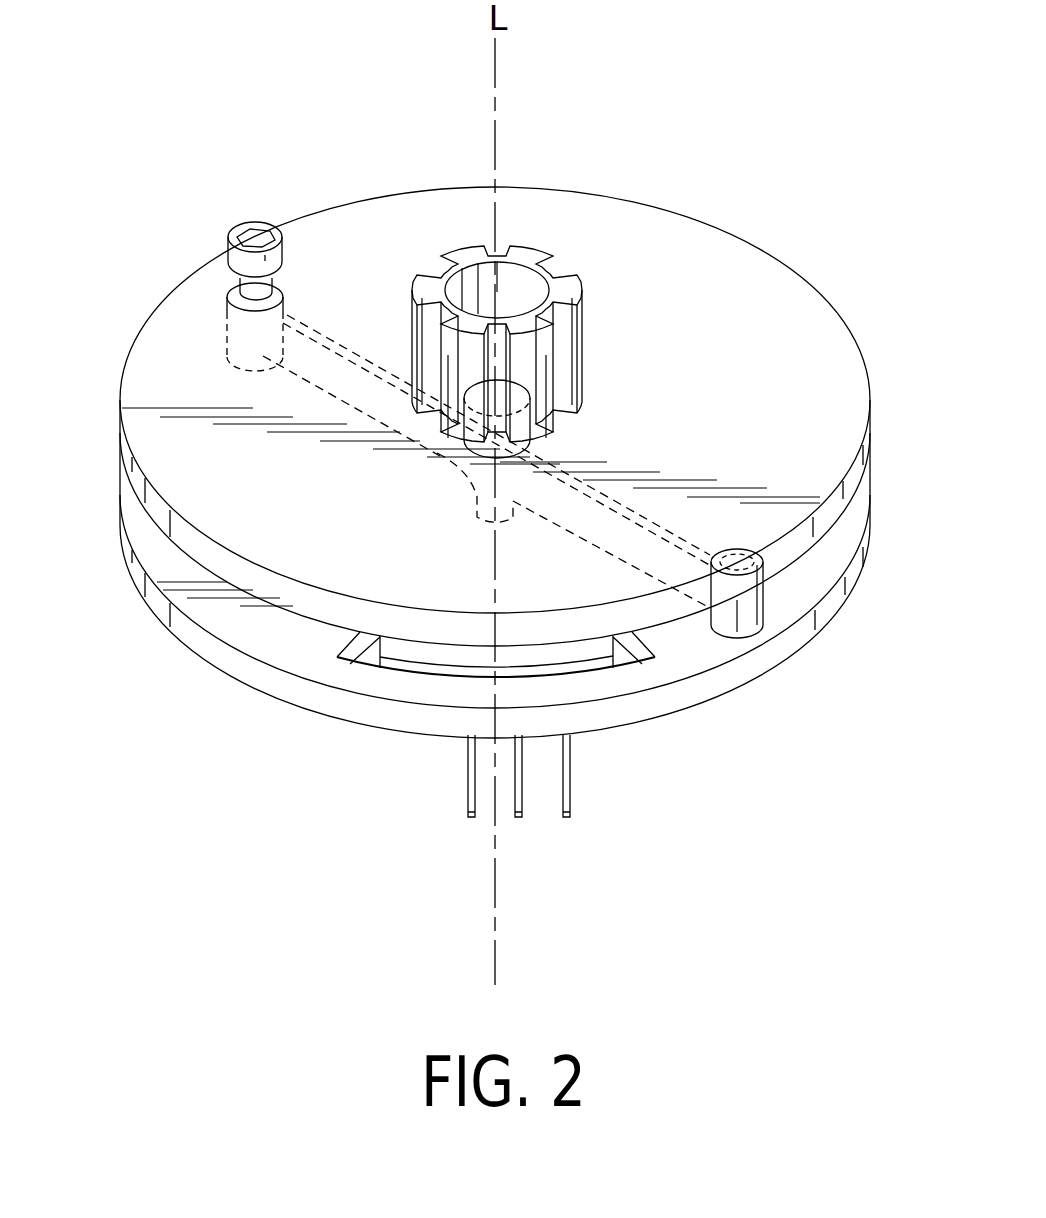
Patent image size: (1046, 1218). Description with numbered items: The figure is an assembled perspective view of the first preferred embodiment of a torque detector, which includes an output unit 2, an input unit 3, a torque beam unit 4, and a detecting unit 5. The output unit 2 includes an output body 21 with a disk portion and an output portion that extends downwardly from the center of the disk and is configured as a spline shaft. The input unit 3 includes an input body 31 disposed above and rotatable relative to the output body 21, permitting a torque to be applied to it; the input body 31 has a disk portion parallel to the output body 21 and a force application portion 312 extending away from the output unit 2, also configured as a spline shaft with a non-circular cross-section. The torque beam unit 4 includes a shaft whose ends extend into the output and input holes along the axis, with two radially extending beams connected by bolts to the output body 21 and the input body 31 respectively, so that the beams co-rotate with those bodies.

The output unit 2 is at (718, 703).
The output body 21 is at (797, 640).
The input unit 3 is at (740, 232).
The input body 31 is at (150, 372).
The force application portion 312 is at (428, 293).
The torque beam unit 4 is at (790, 587).
The detecting unit 5 is at (460, 766).